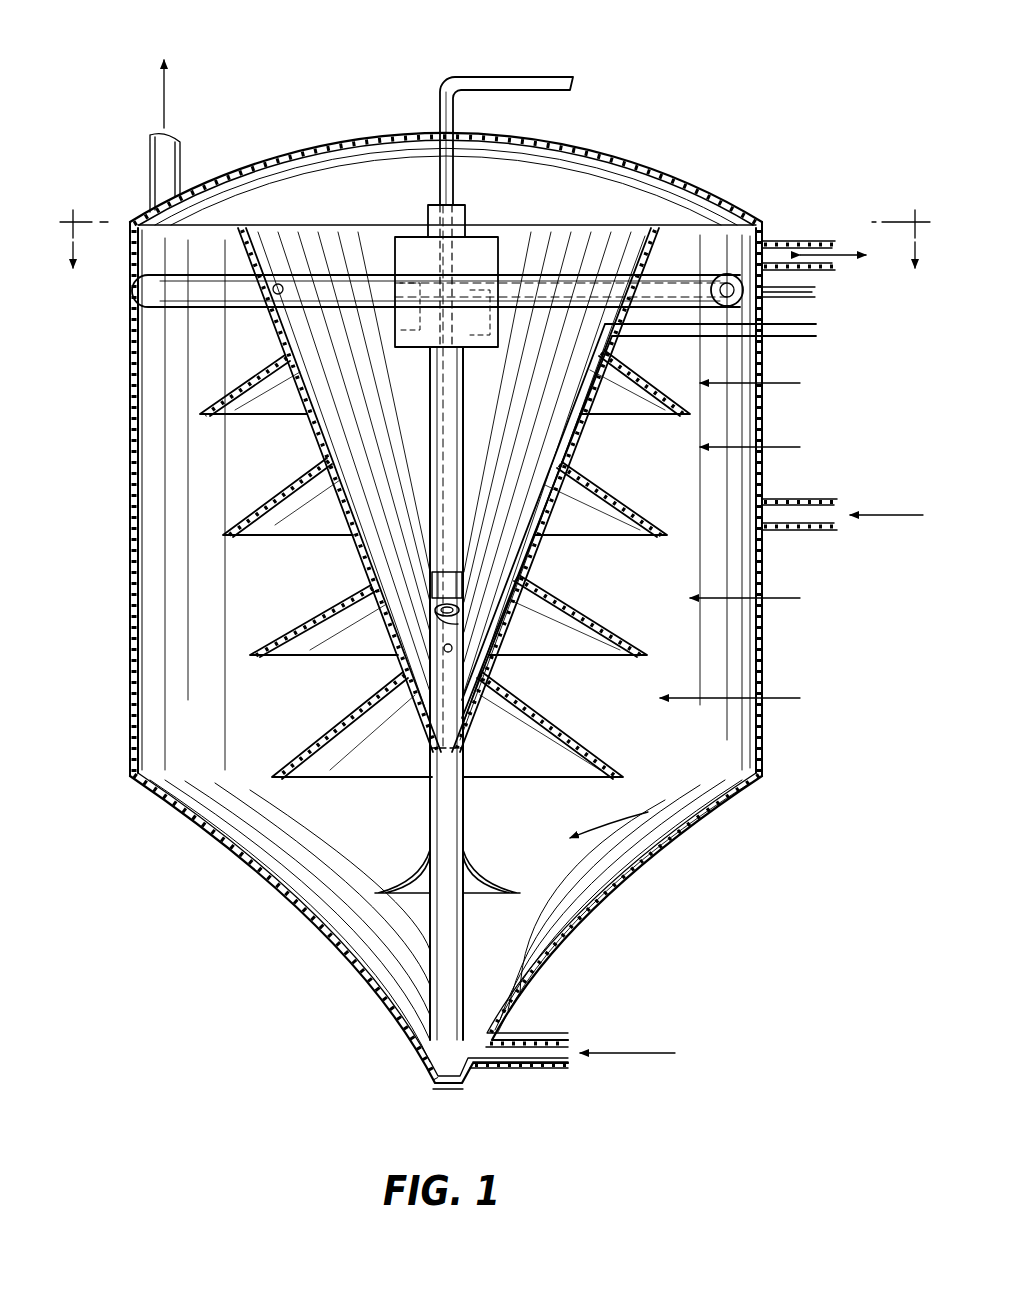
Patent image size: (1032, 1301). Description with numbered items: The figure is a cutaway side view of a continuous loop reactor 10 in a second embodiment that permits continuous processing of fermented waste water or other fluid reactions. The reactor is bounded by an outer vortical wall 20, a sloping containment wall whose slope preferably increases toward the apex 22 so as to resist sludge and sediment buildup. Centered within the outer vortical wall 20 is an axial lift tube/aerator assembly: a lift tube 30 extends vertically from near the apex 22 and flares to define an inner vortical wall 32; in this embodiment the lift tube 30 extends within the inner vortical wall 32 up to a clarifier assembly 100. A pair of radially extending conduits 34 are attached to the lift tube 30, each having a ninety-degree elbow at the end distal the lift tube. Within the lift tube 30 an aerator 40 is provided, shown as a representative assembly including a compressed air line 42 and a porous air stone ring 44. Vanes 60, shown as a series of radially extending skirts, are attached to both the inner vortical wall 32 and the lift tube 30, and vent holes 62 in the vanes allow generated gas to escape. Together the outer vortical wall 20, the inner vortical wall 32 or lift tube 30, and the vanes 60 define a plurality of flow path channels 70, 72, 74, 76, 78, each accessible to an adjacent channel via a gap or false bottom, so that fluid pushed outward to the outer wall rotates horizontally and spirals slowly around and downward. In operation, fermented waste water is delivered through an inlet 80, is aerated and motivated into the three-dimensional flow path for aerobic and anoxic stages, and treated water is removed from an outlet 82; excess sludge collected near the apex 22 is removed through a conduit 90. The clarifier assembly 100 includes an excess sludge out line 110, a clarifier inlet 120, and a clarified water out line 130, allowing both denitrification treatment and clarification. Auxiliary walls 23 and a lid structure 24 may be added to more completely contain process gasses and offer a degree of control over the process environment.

The continuous loop reactor 10 is at (702, 124).
The outer vortical wall 20 is at (612, 900).
The apex 22 is at (431, 1089).
The auxiliary walls 23 is at (764, 626).
The lid structure 24 is at (630, 152).
The lift tube 30 is at (466, 935).
The inner vortical wall 32 is at (585, 425).
The radially extending conduits 34 is at (700, 274).
The aerator 40 is at (456, 592).
The compressed air line 42 is at (430, 585).
The porous air stone ring 44 is at (434, 616).
The vanes 60 is at (548, 714).
The vent holes 62 is at (567, 466).
The flow path channel 70 is at (769, 383).
The flow path channel 72 is at (769, 449).
The flow path channel 74 is at (764, 598).
The flow path channel 76 is at (749, 699).
The flow path channel 78 is at (690, 825).
The inlet 80 is at (800, 240).
The outlet 82 is at (838, 497).
The conduit 90 is at (515, 1068).
The clarifier assembly 100 is at (467, 226).
The excess sludge out line 110 is at (816, 335).
The clarifier inlet 120 is at (505, 338).
The clarified water out line 130 is at (800, 298).